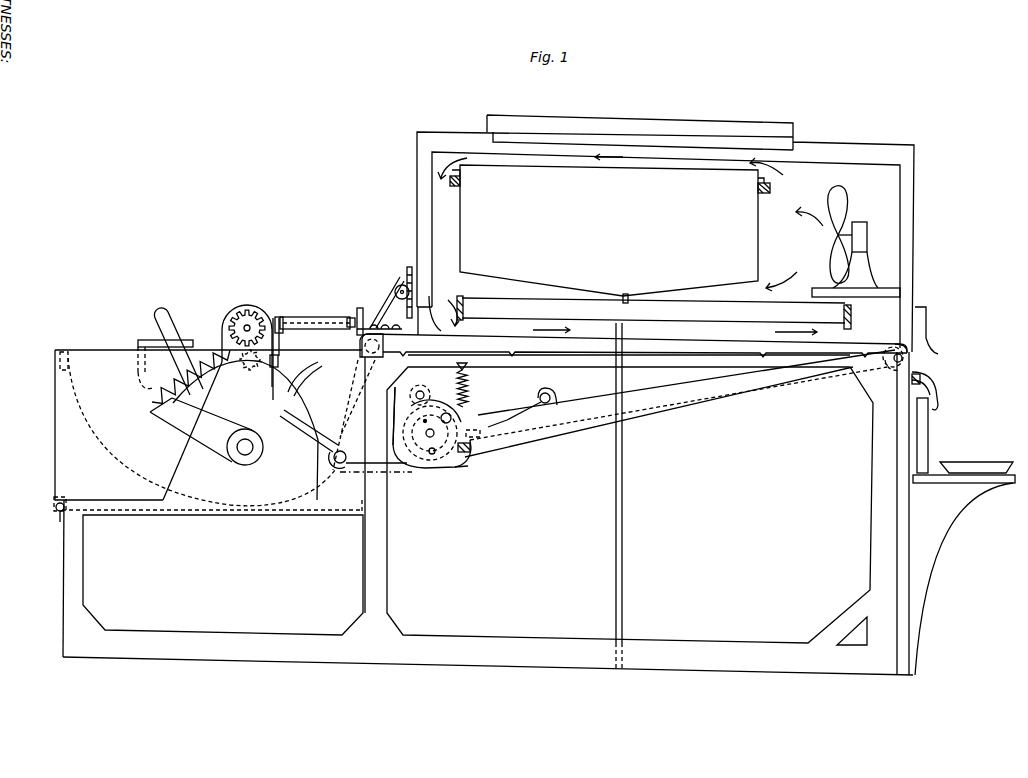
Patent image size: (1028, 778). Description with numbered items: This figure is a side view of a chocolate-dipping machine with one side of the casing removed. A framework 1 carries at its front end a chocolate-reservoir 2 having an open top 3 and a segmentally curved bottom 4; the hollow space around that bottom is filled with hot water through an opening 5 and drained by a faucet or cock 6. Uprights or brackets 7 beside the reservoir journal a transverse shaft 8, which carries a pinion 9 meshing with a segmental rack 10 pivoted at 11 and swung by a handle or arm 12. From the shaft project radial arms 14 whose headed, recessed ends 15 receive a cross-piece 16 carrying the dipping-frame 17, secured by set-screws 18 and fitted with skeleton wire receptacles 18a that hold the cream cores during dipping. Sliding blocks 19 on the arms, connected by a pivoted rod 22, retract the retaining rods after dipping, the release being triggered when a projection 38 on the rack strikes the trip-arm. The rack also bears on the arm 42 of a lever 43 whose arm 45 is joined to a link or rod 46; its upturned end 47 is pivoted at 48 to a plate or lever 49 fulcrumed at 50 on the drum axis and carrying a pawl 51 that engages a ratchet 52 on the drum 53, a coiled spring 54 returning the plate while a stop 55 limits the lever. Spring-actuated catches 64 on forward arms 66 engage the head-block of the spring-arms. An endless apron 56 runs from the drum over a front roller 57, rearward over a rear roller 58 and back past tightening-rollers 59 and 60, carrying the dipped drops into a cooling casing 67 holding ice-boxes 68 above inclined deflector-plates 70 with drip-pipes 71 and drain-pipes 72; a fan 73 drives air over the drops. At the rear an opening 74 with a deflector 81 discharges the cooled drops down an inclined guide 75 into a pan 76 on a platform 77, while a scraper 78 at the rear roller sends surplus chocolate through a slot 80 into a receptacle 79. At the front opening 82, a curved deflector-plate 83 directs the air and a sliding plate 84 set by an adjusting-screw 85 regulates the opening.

The framework 1 is at (488, 513).
The chocolate-reservoir 2 is at (208, 431).
The open top 3 is at (96, 350).
The bottom 4 is at (93, 415).
The opening 5 is at (64, 352).
The faucet or cock 6 is at (54, 506).
The uprights or brackets 7 is at (201, 444).
The transverse shaft 8 is at (255, 312).
The pinion 9 is at (236, 314).
The segmental rack 10 is at (170, 386).
The pivot 11 is at (250, 452).
The handle or arm 12 is at (172, 320).
The radial arms 14 is at (312, 310).
The recessed head 15 is at (360, 308).
The cross-piece 16 is at (360, 338).
The dipping-frame 17 is at (387, 301).
The set-screws 18 is at (350, 318).
The concave pockets or receptacles 18a is at (396, 325).
The longitudinally-sliding blocks 19 is at (282, 333).
The pivoted rod 22 is at (278, 318).
The projection 38 is at (279, 362).
The upwardly and rearwardly projecting arm 42 is at (286, 392).
The lever 43 is at (267, 402).
The downwardly-extending arm 45 is at (346, 441).
The pivoted link or rod 46 is at (430, 470).
The upturned rear end 47 is at (468, 468).
The pivotal connection 48 is at (472, 450).
The plate or lever 49 is at (452, 417).
The fulcrum 50 is at (426, 433).
The pivoted pawl 51 is at (481, 436).
The peripheral ratchet 52 is at (410, 460).
The drum 53 is at (438, 404).
The coiled spring 54 is at (469, 386).
The stop 55 is at (270, 384).
The endless apron 56 is at (648, 391).
The transverse roller 57 is at (360, 356).
The transverse roller 58 is at (905, 357).
The tightening-roller 59 is at (420, 391).
The tightening-roller 60 is at (548, 393).
The spring-actuated catches 64 is at (138, 390).
The arms 66 is at (146, 340).
The supplementary box or casing 67 is at (832, 147).
The ice-boxes 68 is at (610, 230).
The deflector-plates 70 is at (654, 312).
The drip-pipes 71 is at (628, 294).
The drain-pipes 72 is at (624, 491).
The fan 73 is at (838, 203).
The opening 74 is at (902, 346).
The inclined guide 75 is at (940, 388).
The pan or receptacle 76 is at (962, 461).
The platform or bracket 77 is at (948, 519).
The transverse scraper 78 is at (893, 369).
The receptacle 79 is at (922, 433).
The slot 80 is at (913, 381).
The transverse deflector 81 is at (927, 318).
The opening 82 is at (419, 328).
The curved deflector-plate 83 is at (434, 305).
The transverse plate 84 is at (409, 267).
The adjusting-screw 85 is at (397, 287).